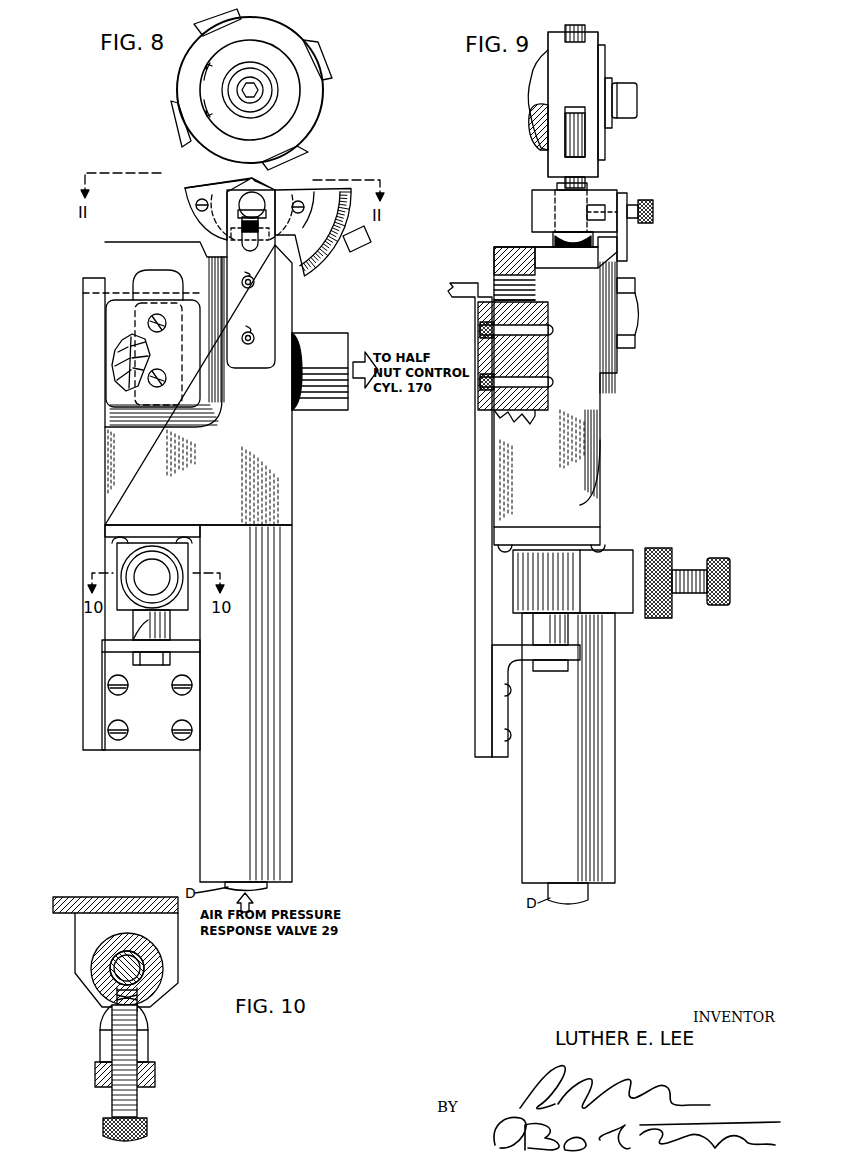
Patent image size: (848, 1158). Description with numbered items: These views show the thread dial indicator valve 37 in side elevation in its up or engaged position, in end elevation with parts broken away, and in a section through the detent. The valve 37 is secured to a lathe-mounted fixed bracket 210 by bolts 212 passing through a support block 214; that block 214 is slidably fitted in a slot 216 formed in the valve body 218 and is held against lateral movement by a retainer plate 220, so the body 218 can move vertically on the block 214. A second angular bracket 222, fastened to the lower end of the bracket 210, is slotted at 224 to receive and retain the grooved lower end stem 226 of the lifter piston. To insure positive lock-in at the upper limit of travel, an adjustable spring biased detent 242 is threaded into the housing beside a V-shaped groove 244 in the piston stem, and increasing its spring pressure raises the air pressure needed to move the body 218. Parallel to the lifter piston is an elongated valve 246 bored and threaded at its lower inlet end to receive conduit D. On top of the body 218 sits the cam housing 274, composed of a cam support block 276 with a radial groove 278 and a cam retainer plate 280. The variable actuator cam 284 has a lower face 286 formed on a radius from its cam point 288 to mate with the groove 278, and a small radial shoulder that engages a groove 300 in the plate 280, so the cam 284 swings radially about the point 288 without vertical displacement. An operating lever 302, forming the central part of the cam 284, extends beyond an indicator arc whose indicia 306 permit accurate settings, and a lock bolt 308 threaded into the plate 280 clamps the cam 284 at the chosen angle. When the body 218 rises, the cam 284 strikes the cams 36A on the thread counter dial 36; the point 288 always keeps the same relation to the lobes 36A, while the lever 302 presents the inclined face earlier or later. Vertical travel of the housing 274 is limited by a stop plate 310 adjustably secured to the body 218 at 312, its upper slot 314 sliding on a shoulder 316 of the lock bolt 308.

In FIG. 8, the thread counter dial 36 is at (316, 107).
In FIG. 9, the thread counter dial 36 is at (596, 64).
In FIG. 8, the cams 36A is at (326, 58).
In FIG. 9, the cams 36A is at (573, 45).
In FIG. 8, the valve 37 is at (72, 272).
In FIG. 9, the valve 37 is at (472, 226).
In FIG. 8, the fixed bracket 210 is at (83, 482).
In FIG. 9, the fixed bracket 210 is at (450, 284).
In FIG. 10, the fixed bracket 210 is at (83, 897).
In FIG. 8, the bolts 212 is at (163, 372).
In FIG. 9, the bolts 212 is at (550, 358).
In FIG. 8, the support block 214 is at (142, 344).
In FIG. 9, the support block 214 is at (526, 310).
In FIG. 8, the slot 216 is at (130, 285).
In FIG. 9, the slot 216 is at (503, 290).
In FIG. 8, the valve body 218 is at (150, 241).
In FIG. 9, the valve body 218 is at (505, 247).
In FIG. 8, the retainer plate 220 is at (118, 323).
In FIG. 9, the retainer plate 220 is at (549, 337).
In FIG. 8, the angular bracket 222 is at (108, 700).
In FIG. 9, the angular bracket 222 is at (492, 658).
In FIG. 10, the angular bracket 222 is at (178, 960).
In FIG. 8, the slot 224 is at (144, 642).
In FIG. 9, the slot 224 is at (550, 629).
In FIG. 10, the slot 224 is at (172, 988).
In FIG. 8, the lower end stem 226 is at (148, 667).
In FIG. 9, the lower end stem 226 is at (549, 672).
In FIG. 8, the spring biased detent 242 is at (194, 562).
In FIG. 9, the spring biased detent 242 is at (688, 554).
In FIG. 10, the spring biased detent 242 is at (155, 1022).
In FIG. 10, the V-shaped groove 244 is at (112, 967).
In FIG. 8, the elongated valve 246 is at (298, 605).
In FIG. 9, the elongated valve 246 is at (623, 699).
In FIG. 8, the cam housing 274 is at (183, 192).
In FIG. 9, the cam housing 274 is at (612, 192).
In FIG. 9, the cam support block 276 is at (532, 203).
In FIG. 8, the radial groove 278 is at (213, 190).
In FIG. 9, the radial groove 278 is at (536, 190).
In FIG. 8, the cam retainer plate 280 is at (207, 222).
In FIG. 9, the cam retainer plate 280 is at (606, 227).
In FIG. 8, the variable actuator cam 284 is at (282, 181).
In FIG. 9, the variable actuator cam 284 is at (600, 182).
In FIG. 9, the lower face 286 is at (565, 276).
In FIG. 8, the cam point 288 is at (252, 180).
In FIG. 9, the groove 300 is at (605, 238).
In FIG. 8, the operating lever 302 is at (370, 243).
In FIG. 8, the indicia 306 is at (328, 264).
In FIG. 8, the lock bolt 308 is at (232, 236).
In FIG. 9, the lock bolt 308 is at (655, 208).
In FIG. 8, the stop plate 310 is at (268, 293).
In FIG. 9, the stop plate 310 is at (640, 322).
In FIG. 8, the adjustable securing point 312 is at (249, 331).
In FIG. 9, the adjustable securing point 312 is at (643, 305).
In FIG. 8, the slot 314 is at (254, 252).
In FIG. 9, the shoulder 316 is at (632, 196).